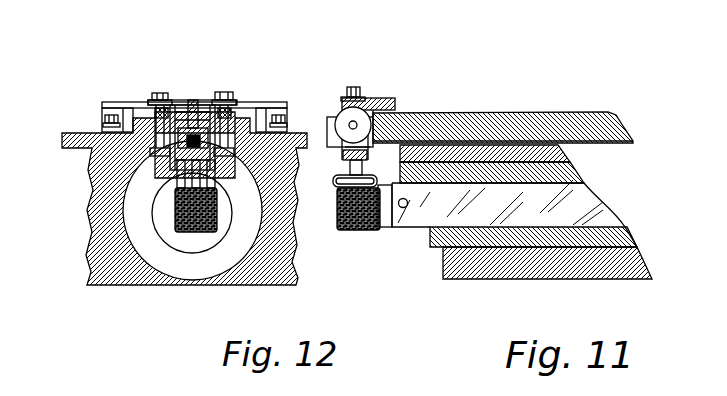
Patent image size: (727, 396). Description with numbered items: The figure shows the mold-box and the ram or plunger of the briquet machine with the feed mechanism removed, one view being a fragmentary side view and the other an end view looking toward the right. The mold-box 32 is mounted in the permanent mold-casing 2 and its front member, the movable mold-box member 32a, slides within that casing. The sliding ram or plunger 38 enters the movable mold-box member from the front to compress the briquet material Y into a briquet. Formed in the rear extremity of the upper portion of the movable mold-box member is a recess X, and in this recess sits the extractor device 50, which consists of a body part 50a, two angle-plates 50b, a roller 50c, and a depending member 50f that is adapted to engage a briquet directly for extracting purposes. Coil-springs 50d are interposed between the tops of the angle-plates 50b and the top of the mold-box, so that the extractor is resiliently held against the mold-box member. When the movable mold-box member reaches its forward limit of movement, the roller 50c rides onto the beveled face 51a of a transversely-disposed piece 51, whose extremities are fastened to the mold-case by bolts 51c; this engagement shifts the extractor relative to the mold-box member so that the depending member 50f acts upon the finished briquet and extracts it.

In FIG. 12, the permanent mold-casing 2 is at (297, 257).
In FIG. 11, the permanent mold-casing 2 is at (443, 267).
In FIG. 11, the mold-box 32 is at (516, 164).
In FIG. 11, the movable mold-box member 32a is at (503, 113).
In FIG. 11, the sliding ram or plunger 38 is at (514, 213).
In FIG. 11, the extractor device 50 is at (348, 193).
In FIG. 12, the body part 50a is at (156, 104).
In FIG. 12, the angle-plates 50b is at (212, 100).
In FIG. 12, the roller 50c is at (263, 52).
In FIG. 11, the roller 50c is at (361, 118).
In FIG. 12, the coil-springs 50d is at (258, 86).
In FIG. 12, the depending member 50f is at (175, 181).
In FIG. 11, the depending member 50f is at (382, 172).
In FIG. 11, the transversely-disposed piece 51 is at (390, 100).
In FIG. 12, the beveled face 51a is at (299, 105).
In FIG. 11, the beveled face 51a is at (351, 87).
In FIG. 12, the bolts 51c is at (300, 86).
In FIG. 11, the recess x is at (372, 134).
In FIG. 11, the briquet material y is at (362, 232).